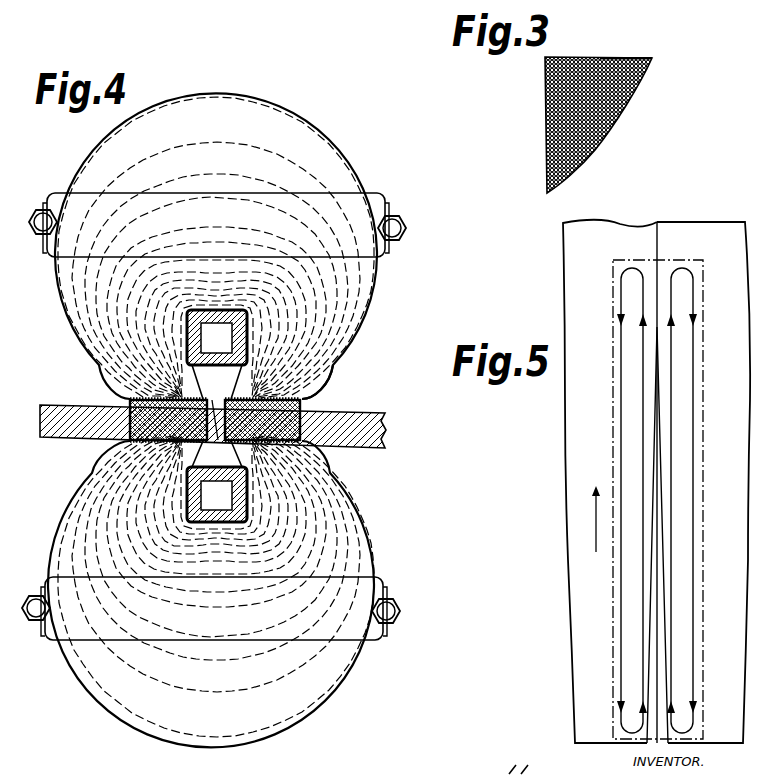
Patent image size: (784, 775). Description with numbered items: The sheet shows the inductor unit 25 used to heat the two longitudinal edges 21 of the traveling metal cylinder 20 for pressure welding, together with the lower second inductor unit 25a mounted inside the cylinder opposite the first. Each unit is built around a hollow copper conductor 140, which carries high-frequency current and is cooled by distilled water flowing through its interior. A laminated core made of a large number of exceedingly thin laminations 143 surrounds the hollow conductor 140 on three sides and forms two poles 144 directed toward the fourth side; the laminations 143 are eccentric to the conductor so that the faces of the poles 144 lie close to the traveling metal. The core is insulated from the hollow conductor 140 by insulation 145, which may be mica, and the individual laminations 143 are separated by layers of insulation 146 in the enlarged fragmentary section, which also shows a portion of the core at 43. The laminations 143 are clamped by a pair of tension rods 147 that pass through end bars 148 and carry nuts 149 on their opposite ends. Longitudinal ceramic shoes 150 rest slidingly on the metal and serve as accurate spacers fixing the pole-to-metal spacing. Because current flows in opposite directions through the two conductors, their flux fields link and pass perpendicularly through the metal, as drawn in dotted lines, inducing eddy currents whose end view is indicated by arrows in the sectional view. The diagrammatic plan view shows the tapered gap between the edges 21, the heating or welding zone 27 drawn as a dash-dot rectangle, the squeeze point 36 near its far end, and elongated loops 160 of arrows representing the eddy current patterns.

In FIG. 4, the traveling metal cylinder 20 is at (388, 415).
In FIG. 5, the traveling metal cylinder 20 is at (619, 224).
In FIG. 4, the longitudinal edges 21 is at (302, 442).
In FIG. 5, the longitudinal edges 21 is at (665, 640).
In FIG. 4, the inductor unit 25 is at (274, 102).
In FIG. 4, the second inductor unit 25a is at (113, 712).
In FIG. 5, the heating or welding zone 27 is at (704, 393).
In FIG. 5, the squeeze point 36 is at (658, 262).
In FIG. 3, the shield segment 43 is at (588, 57).
In FIG. 4, the hollow copper conductor 140 is at (250, 342).
In FIG. 4, the laminations 143 is at (331, 158).
In FIG. 4, the poles 144 is at (303, 399).
In FIG. 4, the insulation 145 is at (232, 338).
In FIG. 3, the layers of insulation 146 is at (646, 58).
In FIG. 4, the tension rods 147 is at (400, 220).
In FIG. 4, the end bars 148 is at (380, 197).
In FIG. 4, the nuts 149 is at (405, 228).
In FIG. 4, the ceramic shoes 150 is at (130, 398).
In FIG. 5, the elongated loops 160 is at (638, 430).